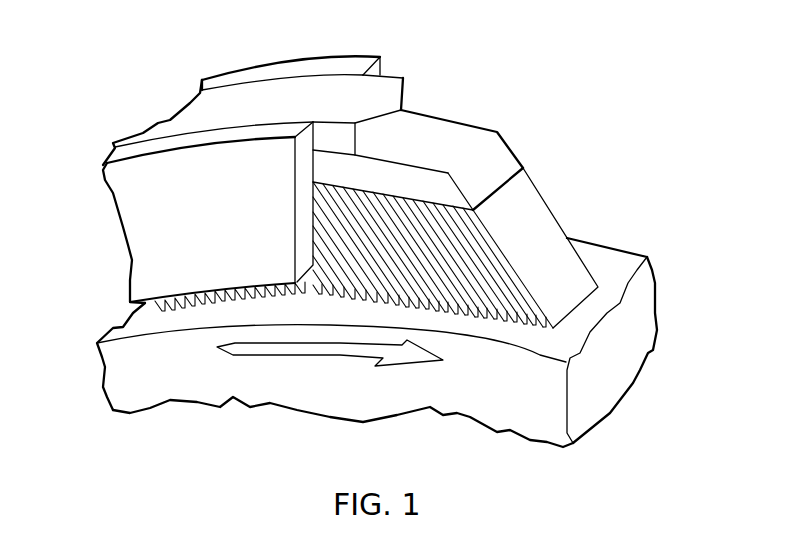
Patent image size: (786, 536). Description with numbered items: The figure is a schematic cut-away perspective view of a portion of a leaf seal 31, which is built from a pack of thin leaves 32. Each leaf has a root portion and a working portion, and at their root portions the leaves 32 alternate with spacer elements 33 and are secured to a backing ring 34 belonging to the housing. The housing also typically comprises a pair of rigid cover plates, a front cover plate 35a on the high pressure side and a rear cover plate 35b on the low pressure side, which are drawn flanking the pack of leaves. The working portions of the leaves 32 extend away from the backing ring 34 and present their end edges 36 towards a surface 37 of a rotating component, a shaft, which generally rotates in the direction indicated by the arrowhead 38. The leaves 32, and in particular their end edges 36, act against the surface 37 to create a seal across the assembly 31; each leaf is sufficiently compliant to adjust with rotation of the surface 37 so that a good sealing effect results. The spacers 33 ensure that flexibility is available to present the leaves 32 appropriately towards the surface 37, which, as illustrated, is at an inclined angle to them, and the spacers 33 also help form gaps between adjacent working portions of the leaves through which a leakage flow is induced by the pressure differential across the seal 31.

The leaf seal 31 is at (440, 85).
The leaves 32 is at (530, 223).
The spacer elements 33 is at (488, 123).
The backing ring 34 is at (200, 110).
The front rigid cover plate 35a is at (157, 218).
The rear rigid cover plate 35b is at (285, 68).
The end edges 36 is at (587, 302).
The surface of rotating component 37 is at (510, 342).
The arrowhead 38 is at (278, 350).